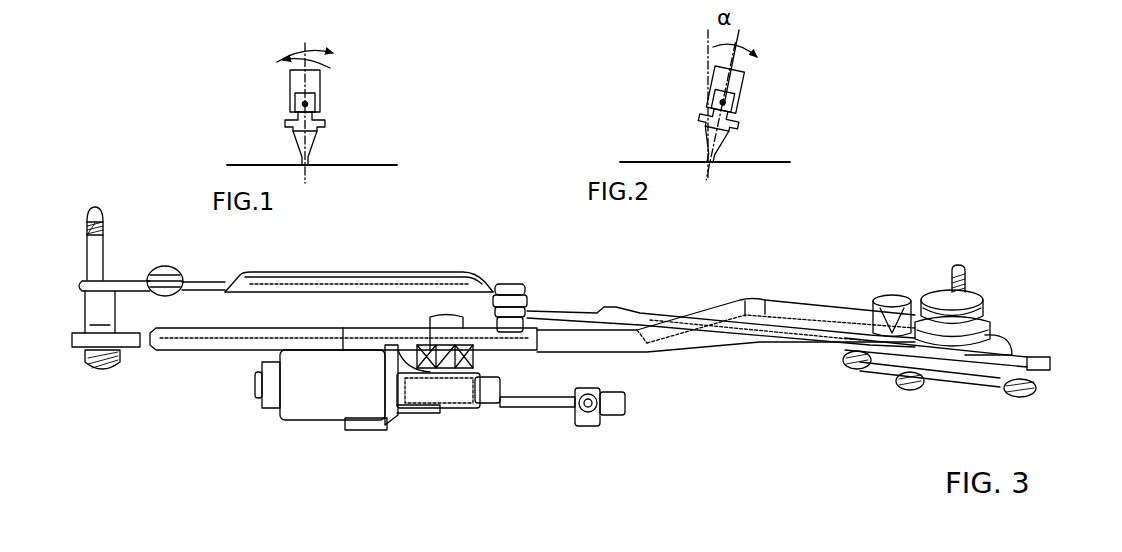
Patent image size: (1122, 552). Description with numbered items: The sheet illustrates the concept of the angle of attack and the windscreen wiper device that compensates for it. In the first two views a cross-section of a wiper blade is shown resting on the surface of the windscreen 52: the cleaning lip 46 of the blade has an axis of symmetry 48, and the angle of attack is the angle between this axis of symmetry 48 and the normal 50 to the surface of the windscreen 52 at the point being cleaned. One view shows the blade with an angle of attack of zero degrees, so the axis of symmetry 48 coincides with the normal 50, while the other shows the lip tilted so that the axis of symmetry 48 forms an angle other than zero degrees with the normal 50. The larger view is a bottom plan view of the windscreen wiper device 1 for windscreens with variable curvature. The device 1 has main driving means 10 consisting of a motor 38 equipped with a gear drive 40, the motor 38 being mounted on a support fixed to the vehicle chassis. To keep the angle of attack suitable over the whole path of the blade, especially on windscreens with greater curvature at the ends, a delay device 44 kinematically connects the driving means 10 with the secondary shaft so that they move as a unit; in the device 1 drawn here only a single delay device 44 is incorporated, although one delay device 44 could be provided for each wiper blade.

In FIG. 3, the windscreen wiper device 1 is at (822, 290).
In FIG. 3, the main driving means 10 is at (440, 448).
In FIG. 3, the motor 38 is at (302, 410).
In FIG. 3, the gear drive 40 is at (467, 390).
In FIG. 3, the delay device 44 is at (990, 287).
In FIG. 1, the cleaning lip 46 is at (300, 140).
In FIG. 2, the cleaning lip 46 is at (727, 133).
In FIG. 1, the axis of symmetry 48 is at (313, 145).
In FIG. 2, the axis of symmetry 48 is at (747, 88).
In FIG. 1, the normal 50 is at (305, 113).
In FIG. 2, the normal 50 is at (712, 82).
In FIG. 1, the windscreen 52 is at (387, 165).
In FIG. 2, the windscreen 52 is at (637, 162).